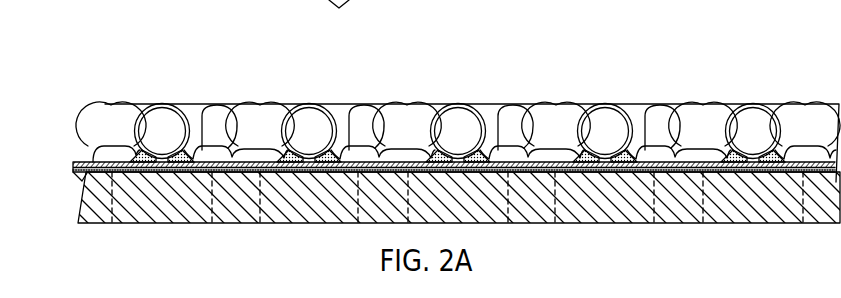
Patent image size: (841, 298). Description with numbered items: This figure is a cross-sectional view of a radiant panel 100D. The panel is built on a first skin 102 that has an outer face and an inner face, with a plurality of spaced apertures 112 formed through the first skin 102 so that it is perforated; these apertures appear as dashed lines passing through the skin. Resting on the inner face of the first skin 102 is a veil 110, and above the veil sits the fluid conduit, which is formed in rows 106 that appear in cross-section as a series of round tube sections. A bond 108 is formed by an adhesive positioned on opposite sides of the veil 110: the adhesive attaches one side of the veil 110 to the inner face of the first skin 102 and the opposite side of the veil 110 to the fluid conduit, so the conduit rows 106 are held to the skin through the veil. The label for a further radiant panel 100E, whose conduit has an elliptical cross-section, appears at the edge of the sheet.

The first skin 102 is at (80, 191).
The rows 106 is at (461, 98).
The bond 108 is at (464, 161).
The veil 110 is at (204, 150).
The spaced apertures 112 is at (208, 215).
The radiant panel 100D is at (684, 52).
The radiant panel 100E is at (770, 289).